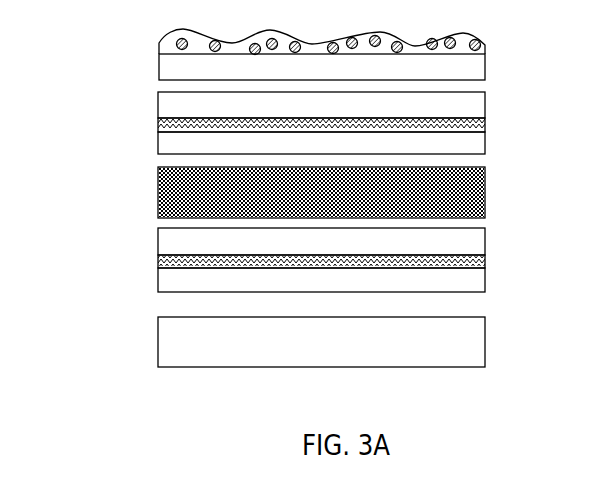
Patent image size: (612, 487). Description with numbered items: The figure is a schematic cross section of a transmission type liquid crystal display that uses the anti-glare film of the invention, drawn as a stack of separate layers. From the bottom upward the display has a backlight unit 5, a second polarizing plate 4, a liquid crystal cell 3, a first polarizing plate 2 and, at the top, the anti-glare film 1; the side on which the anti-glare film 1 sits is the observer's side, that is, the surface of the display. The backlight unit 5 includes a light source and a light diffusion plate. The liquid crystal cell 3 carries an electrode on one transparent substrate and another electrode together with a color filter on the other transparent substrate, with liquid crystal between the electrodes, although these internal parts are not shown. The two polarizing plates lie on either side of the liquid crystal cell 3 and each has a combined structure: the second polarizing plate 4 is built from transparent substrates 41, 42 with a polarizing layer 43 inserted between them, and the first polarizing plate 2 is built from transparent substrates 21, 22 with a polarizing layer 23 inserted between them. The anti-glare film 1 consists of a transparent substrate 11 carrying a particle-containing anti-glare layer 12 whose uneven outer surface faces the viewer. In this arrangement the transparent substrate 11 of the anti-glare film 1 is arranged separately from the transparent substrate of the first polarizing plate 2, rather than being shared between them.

The anti-glare film 1 is at (498, 43).
The transparent substrate 11 is at (180, 64).
The anti-glare layer 12 is at (148, 32).
The first polarizing plate 2 is at (500, 92).
The transparent substrate 21 is at (168, 104).
The transparent substrate 22 is at (177, 148).
The polarizing layer 23 is at (168, 122).
The liquid crystal cell 3 is at (473, 204).
The second polarizing plate 4 is at (508, 228).
The transparent substrate 41 is at (173, 238).
The transparent substrate 42 is at (177, 283).
The polarizing layer 43 is at (163, 262).
The backlight unit 5 is at (470, 347).